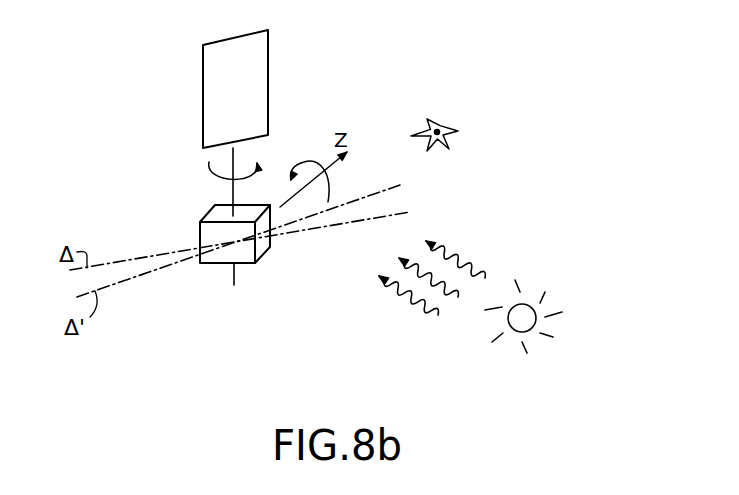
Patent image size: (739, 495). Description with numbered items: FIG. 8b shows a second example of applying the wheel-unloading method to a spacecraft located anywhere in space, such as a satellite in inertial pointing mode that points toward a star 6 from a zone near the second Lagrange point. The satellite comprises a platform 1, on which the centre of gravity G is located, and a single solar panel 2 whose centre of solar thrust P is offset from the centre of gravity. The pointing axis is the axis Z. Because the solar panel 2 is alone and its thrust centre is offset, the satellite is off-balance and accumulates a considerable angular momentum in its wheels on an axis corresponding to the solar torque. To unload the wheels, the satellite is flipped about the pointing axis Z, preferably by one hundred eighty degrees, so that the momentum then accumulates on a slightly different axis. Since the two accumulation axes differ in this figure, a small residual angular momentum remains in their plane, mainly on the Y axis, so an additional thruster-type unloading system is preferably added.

The platform 1 is at (203, 218).
The solar panel 2 is at (260, 58).
The star 6 is at (448, 120).